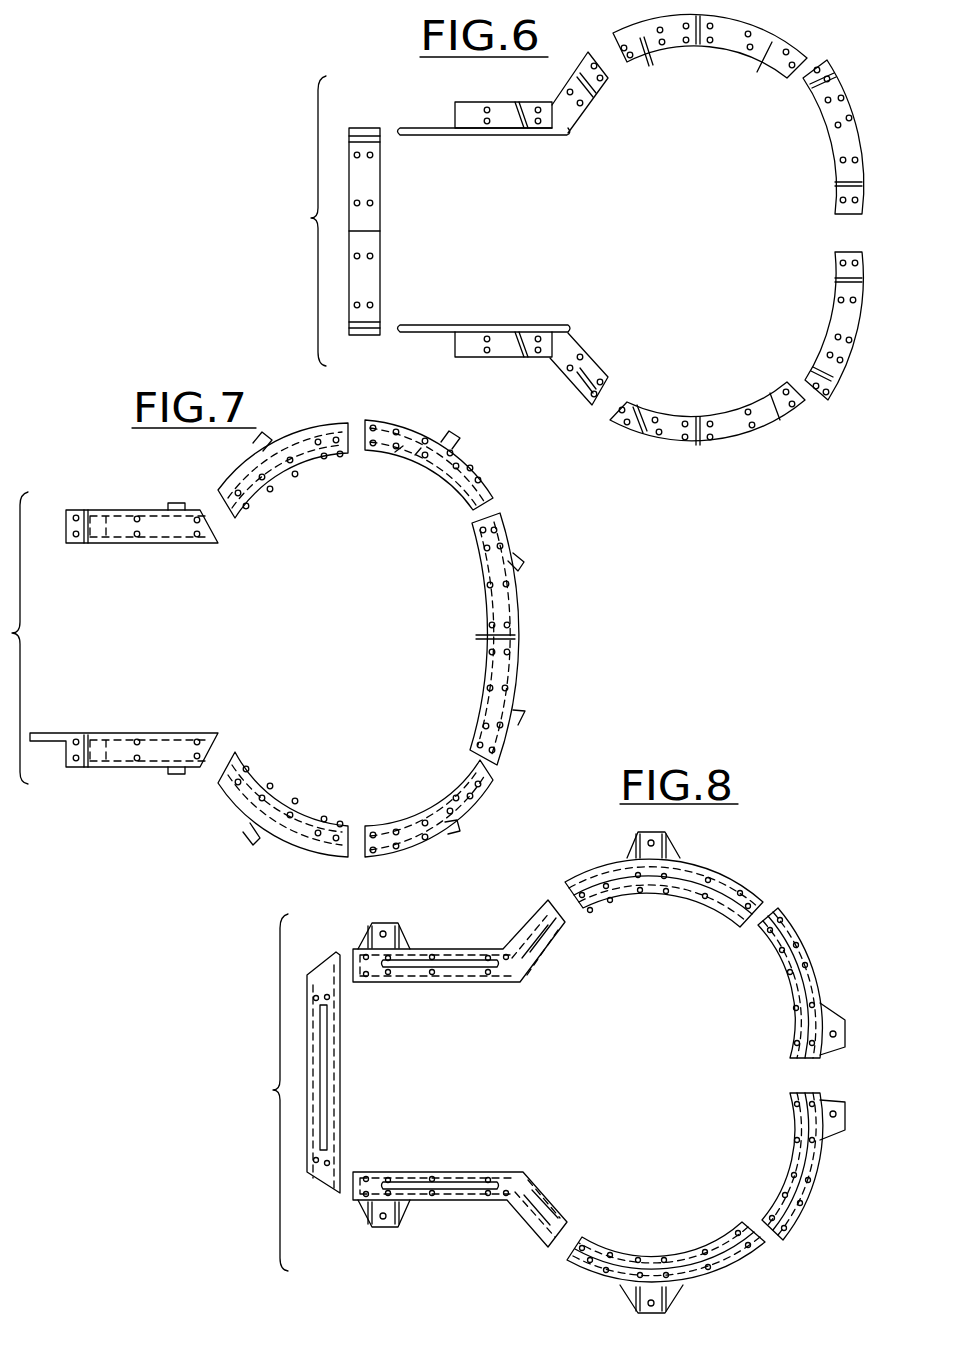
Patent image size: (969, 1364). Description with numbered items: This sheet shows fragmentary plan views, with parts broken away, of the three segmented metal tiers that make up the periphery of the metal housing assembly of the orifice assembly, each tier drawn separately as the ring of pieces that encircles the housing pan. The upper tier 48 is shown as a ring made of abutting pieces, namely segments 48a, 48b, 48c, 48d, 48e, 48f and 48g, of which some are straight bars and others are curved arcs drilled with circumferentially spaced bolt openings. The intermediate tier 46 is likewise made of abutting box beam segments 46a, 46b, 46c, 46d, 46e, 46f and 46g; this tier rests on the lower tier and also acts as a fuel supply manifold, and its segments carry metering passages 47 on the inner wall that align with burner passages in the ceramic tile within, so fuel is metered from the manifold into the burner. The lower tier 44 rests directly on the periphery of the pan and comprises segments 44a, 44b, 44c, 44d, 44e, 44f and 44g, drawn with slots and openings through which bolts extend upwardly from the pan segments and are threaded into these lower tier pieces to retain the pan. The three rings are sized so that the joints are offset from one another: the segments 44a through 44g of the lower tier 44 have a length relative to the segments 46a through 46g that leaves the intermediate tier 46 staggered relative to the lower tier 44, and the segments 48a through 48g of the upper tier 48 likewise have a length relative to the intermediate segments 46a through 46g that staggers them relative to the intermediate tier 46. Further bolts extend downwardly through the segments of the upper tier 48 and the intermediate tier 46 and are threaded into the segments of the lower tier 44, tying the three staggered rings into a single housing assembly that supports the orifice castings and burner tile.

In FIG. 8, the lower tier 44 is at (753, 877).
In FIG. 8, the lower tier segment 44a is at (341, 1099).
In FIG. 8, the lower tier segment 44b is at (402, 983).
In FIG. 8, the lower tier segment 44c is at (437, 1172).
In FIG. 8, the lower tier segment 44d is at (680, 895).
In FIG. 8, the lower tier segment 44e is at (650, 1255).
In FIG. 8, the lower tier segment 44f is at (788, 1025).
In FIG. 8, the lower tier segment 44g is at (788, 1158).
In FIG. 7, the intermediate tier 46 is at (540, 593).
In FIG. 7, the intermediate tier segment 46a is at (148, 547).
In FIG. 7, the intermediate tier segment 46b is at (135, 733).
In FIG. 7, the intermediate tier segment 46c is at (283, 472).
In FIG. 7, the intermediate tier segment 46d is at (290, 813).
In FIG. 7, the intermediate tier segment 46e is at (443, 477).
In FIG. 7, the intermediate tier segment 46f is at (418, 813).
In FIG. 7, the intermediate tier segment 46g is at (482, 668).
In FIG. 7, the metering passages 47 is at (418, 460).
In FIG. 6, the upper tier 48 is at (775, 27).
In FIG. 6, the upper tier segment 48a is at (383, 220).
In FIG. 6, the upper tier segment 48b is at (517, 134).
In FIG. 6, the upper tier segment 48c is at (507, 327).
In FIG. 6, the upper tier segment 48d is at (718, 50).
In FIG. 6, the upper tier segment 48e is at (687, 417).
In FIG. 6, the upper tier segment 48f is at (830, 142).
In FIG. 6, the upper tier segment 48g is at (830, 315).